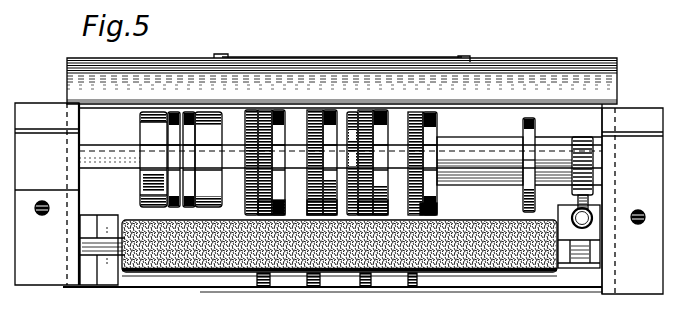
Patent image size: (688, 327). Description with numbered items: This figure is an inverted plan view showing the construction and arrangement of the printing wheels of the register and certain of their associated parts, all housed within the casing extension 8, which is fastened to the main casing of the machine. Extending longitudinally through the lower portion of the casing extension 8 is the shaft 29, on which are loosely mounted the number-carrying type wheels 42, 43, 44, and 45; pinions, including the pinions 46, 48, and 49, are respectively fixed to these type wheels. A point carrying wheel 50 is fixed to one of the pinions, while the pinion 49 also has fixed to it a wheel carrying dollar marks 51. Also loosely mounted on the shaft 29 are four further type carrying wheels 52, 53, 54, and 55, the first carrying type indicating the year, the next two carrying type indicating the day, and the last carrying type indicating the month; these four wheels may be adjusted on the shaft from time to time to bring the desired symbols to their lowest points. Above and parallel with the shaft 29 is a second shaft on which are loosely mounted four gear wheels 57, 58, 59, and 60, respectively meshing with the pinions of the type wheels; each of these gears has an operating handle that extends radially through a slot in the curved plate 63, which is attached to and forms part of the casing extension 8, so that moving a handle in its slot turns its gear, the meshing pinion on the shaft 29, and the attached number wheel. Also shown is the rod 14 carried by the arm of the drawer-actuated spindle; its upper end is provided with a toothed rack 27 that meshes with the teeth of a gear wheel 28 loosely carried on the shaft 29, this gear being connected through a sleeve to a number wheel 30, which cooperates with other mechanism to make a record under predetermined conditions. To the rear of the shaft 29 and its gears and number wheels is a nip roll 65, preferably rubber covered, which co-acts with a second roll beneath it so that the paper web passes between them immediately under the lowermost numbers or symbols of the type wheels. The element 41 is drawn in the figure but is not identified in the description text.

The casing extension 8 is at (150, 61).
The rod 14 is at (592, 228).
The toothed rack 27 is at (595, 199).
The gear wheel 28 is at (584, 138).
The shaft 29 is at (110, 148).
The number wheel 30 is at (523, 131).
The units printing wheel 41 is at (379, 110).
The number-carrying type wheel 42 is at (437, 128).
The number-carrying type wheel 43 is at (383, 110).
The number-carrying type wheel 44 is at (340, 110).
The number-carrying type wheel 45 is at (287, 110).
The pinion 46 is at (408, 190).
The pinion 48 is at (315, 160).
The pinion 49 is at (258, 186).
The point carrying wheel 50 is at (364, 110).
The dollar mark wheel 51 is at (247, 137).
The year type wheel 52 is at (212, 209).
The day type wheel 53 is at (190, 209).
The day type wheel 54 is at (170, 209).
The month type wheel 55 is at (140, 208).
The gear wheel 57 is at (432, 210).
The gear wheel 58 is at (386, 210).
The gear wheel 59 is at (337, 210).
The gear wheel 60 is at (285, 210).
The curved plate 63 is at (305, 57).
The nip roll 65 is at (457, 290).